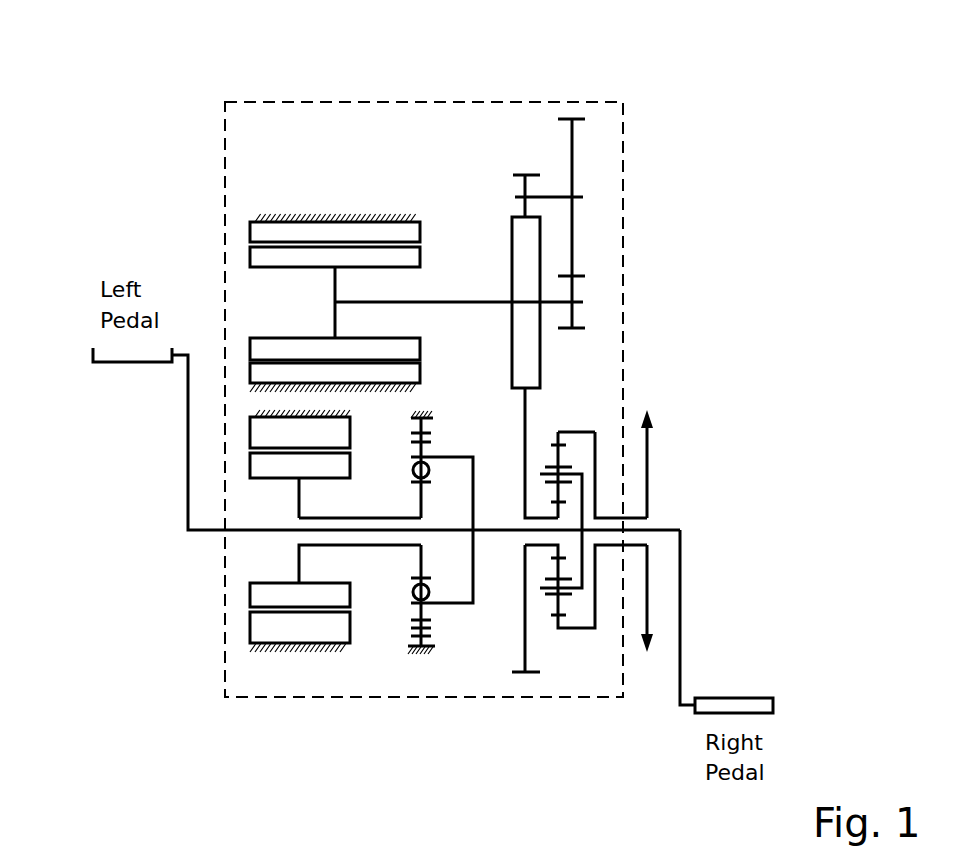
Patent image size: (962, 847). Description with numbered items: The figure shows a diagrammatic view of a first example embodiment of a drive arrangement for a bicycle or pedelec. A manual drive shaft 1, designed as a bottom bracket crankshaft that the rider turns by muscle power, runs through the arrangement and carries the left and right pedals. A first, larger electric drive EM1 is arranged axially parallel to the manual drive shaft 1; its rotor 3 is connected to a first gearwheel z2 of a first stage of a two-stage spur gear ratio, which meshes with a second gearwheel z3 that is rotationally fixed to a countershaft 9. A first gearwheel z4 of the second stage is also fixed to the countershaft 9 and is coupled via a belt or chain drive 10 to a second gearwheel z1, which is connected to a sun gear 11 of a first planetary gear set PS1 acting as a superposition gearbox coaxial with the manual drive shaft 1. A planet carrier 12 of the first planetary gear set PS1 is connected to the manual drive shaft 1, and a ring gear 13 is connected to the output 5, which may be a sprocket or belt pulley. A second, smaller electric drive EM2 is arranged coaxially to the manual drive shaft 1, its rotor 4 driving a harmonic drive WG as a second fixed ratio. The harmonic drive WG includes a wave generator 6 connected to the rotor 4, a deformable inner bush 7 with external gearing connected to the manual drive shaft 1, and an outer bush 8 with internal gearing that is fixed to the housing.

The manual drive shaft 1 is at (251, 532).
The rotor of the first electric drive 3 is at (470, 302).
The rotor of the second electric drive 4 is at (299, 497).
The output 5 is at (648, 472).
The wave generator 6 is at (420, 562).
The inner bush 7 is at (460, 607).
The outer bush 8 is at (425, 633).
The countershaft 9 is at (557, 196).
The belt or chain drive 10 is at (517, 234).
The sun gear 11 is at (557, 508).
The planet carrier 12 is at (577, 473).
The ring gear 13 is at (553, 440).
The first electric drive EM1 is at (300, 205).
The second electric drive EM2 is at (263, 657).
The harmonic drive WG is at (420, 659).
The first planetary gear set PS1 is at (567, 639).
The second gearwheel of the second stage z1 is at (528, 648).
The first gearwheel of the first stage z2 is at (573, 291).
The second gearwheel of the first stage z3 is at (573, 140).
The first gearwheel of the second stage z4 is at (517, 192).